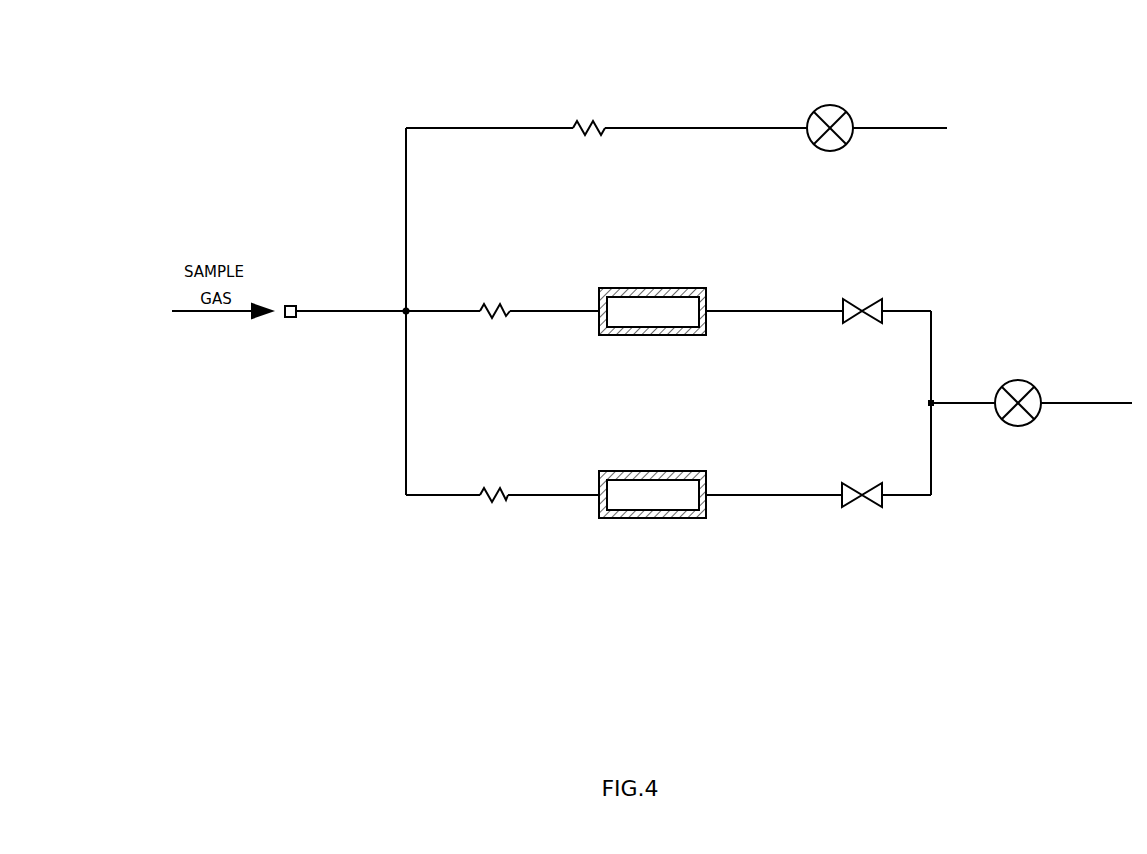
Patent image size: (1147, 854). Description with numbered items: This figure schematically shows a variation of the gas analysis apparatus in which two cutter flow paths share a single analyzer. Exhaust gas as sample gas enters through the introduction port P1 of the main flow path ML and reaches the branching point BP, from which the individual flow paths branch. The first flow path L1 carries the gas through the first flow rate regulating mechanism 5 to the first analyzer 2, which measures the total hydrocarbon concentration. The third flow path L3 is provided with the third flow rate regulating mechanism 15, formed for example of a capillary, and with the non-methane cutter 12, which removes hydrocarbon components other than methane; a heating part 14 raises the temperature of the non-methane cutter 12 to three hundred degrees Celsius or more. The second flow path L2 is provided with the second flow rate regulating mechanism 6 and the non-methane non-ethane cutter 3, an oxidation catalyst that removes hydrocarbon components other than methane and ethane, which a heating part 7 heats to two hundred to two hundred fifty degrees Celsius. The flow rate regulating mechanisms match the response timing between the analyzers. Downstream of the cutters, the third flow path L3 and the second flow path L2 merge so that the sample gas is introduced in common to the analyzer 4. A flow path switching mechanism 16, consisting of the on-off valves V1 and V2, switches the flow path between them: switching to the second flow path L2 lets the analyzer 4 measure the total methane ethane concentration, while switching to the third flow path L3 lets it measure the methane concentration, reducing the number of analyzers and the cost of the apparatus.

The introduction port P1 is at (290, 318).
The main flow path ML is at (344, 309).
The branching point BP is at (404, 315).
The first flow rate regulating mechanism 5 is at (590, 122).
The first flow path L1 is at (724, 126).
The first analyzer 2 is at (830, 104).
The third flow rate regulating mechanism 15 is at (490, 305).
The non-methane cutter 12 is at (683, 288).
The heating part 14 is at (638, 288).
The third flow path L3 is at (771, 308).
The on-off valve V2 is at (856, 302).
The flow path switching mechanism 16 is at (899, 298).
The second analyzer 4 is at (1018, 380).
The second flow rate regulating mechanism 6 is at (491, 490).
The non-methane non-ethane cutter 3 is at (676, 471).
The heating part 7 is at (630, 471).
The second flow path L2 is at (770, 490).
The on-off valve V1 is at (856, 485).